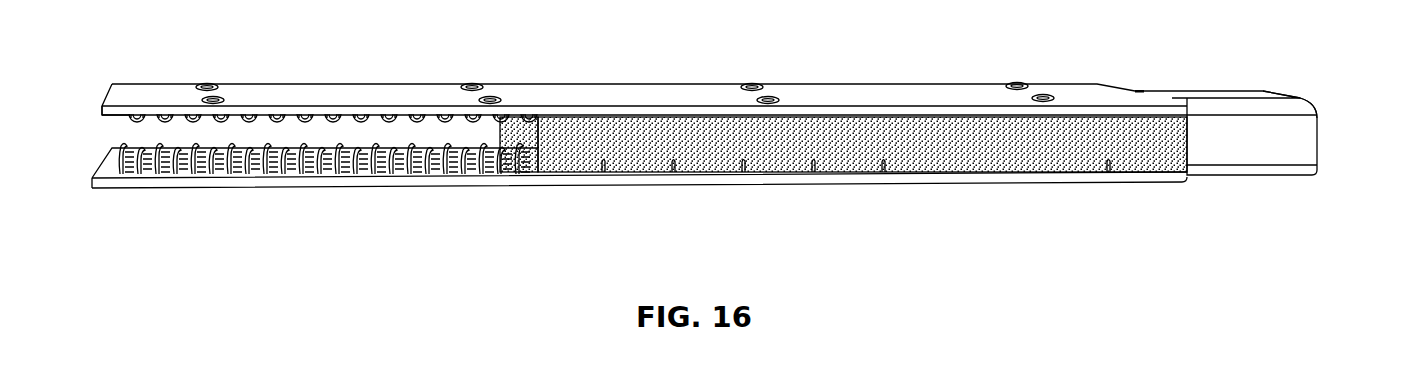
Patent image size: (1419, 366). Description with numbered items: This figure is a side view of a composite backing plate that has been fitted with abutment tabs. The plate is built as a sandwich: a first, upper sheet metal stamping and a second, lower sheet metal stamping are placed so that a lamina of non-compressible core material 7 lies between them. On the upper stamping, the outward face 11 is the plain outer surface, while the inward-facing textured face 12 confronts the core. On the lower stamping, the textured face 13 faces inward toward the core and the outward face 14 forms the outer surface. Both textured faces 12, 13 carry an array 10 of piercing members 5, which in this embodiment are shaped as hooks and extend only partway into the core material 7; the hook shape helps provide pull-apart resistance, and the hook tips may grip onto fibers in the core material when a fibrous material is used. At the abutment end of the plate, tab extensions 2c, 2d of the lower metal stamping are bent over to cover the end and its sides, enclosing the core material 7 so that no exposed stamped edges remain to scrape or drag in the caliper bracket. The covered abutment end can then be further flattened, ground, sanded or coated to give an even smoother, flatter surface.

The outward face 11 is at (343, 92).
The textured face 12 is at (108, 118).
The textured face 13 is at (107, 150).
The outward face 14 is at (453, 183).
The array 10 is at (281, 181).
The core material 7 is at (682, 128).
The piercing members 5 is at (672, 166).
The tab extension 2c is at (1245, 142).
The tab extension 2d is at (1318, 112).